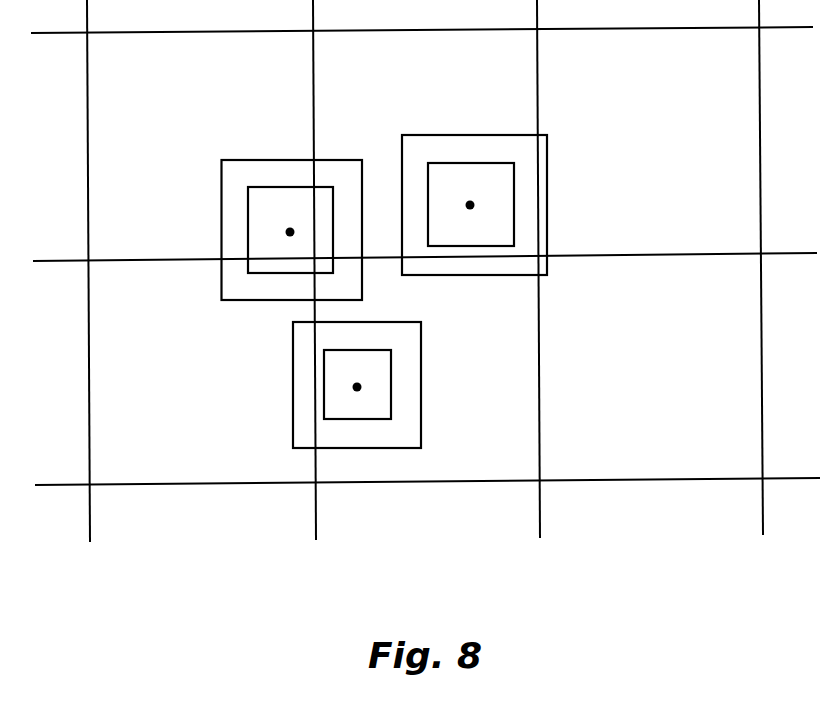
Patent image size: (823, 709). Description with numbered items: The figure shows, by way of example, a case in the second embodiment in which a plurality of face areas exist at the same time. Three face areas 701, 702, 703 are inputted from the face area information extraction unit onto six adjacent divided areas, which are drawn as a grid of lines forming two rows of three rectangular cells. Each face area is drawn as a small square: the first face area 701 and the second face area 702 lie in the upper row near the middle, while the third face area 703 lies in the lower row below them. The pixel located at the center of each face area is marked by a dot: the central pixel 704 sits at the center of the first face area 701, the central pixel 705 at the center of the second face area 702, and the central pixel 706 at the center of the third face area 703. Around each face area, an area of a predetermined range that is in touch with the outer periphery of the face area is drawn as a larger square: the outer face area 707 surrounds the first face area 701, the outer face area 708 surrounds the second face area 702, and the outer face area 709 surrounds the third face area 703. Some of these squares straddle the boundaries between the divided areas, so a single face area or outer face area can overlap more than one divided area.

The face area 701 is at (270, 207).
The face area 702 is at (460, 187).
The face area 703 is at (378, 379).
The central pixel 704 is at (294, 244).
The central pixel 705 is at (475, 218).
The central pixel 706 is at (360, 400).
The outer face area 707 is at (288, 173).
The outer face area 708 is at (487, 153).
The outer face area 709 is at (412, 413).